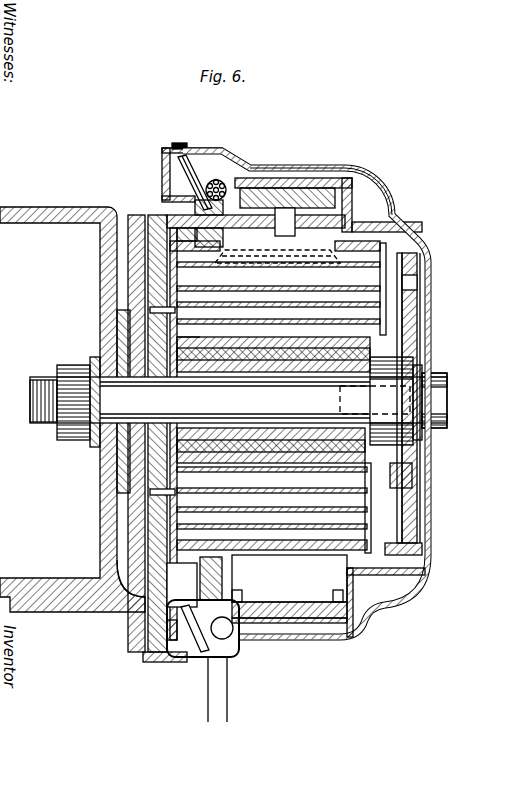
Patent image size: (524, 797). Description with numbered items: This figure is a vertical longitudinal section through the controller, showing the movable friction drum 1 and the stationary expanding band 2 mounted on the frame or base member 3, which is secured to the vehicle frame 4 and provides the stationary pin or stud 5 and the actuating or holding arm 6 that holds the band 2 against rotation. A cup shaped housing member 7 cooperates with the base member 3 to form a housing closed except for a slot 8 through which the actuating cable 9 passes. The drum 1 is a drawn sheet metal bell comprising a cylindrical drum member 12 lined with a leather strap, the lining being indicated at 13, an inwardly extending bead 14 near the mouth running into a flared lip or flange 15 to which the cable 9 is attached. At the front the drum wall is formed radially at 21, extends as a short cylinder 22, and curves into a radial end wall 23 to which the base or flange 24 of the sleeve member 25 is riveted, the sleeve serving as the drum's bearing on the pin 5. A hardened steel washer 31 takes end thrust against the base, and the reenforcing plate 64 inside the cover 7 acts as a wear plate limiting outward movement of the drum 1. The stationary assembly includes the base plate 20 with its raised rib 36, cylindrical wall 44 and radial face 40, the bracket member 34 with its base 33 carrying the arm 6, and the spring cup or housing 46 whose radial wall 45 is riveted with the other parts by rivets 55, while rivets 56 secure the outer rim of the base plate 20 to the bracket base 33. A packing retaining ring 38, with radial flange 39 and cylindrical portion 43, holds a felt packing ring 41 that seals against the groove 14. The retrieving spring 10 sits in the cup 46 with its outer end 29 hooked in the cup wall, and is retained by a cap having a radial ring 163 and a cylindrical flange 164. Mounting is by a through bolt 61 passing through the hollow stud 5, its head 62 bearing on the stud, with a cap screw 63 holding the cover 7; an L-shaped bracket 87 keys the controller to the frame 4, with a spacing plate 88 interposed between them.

The friction drum 1 is at (290, 185).
The expanding band 2 is at (320, 600).
The frame or base member 3 is at (153, 168).
The vehicle frame 4 is at (38, 207).
The pin or stud 5 is at (297, 367).
The actuating or holding arm 6 is at (355, 222).
The cup shaped housing member 7 is at (425, 242).
The slot 8 is at (517, 303).
The actuating cable 9 is at (220, 182).
The retrieving spring 10 is at (350, 297).
The cylindrical drum member 12 is at (262, 190).
The frame ring 13 is at (322, 180).
The inwardly extending bead 14 is at (216, 652).
The flared lip or flange 15 is at (195, 656).
The base plate 20 is at (176, 146).
The radial wall 21 is at (352, 168).
The short cylinder 22 is at (378, 224).
The radial end wall 23 is at (408, 262).
The base or flange 24 is at (418, 305).
The sleeve member 25 is at (345, 352).
The outer end of spring 29 is at (318, 253).
The hardened steel washer 31 is at (193, 333).
The base of bracket 33 is at (213, 246).
The bracket member 34 is at (193, 212).
The raised rib 36 is at (168, 595).
The packing retaining ring 38 is at (240, 183).
The radial flange 39 is at (240, 630).
The radial face 40 is at (168, 658).
The felt packing ring 41 is at (198, 208).
The cylindrical portion 43 is at (173, 572).
The cylindrical wall 44 is at (128, 603).
The radial wall of spring cup 45 is at (155, 520).
The spring cup or housing 46 is at (283, 595).
The rivets 55 is at (165, 310).
The rivets 56 is at (165, 630).
The through bolt 61 is at (82, 438).
The head of bolt 62 is at (415, 365).
The cap screw 63 is at (440, 378).
The reenforcing plate 64 is at (427, 320).
The L-shaped bracket 87 is at (137, 535).
The spacing plate 88 is at (122, 338).
The radial ring 163 is at (425, 490).
The cylindrical flange 164 is at (430, 555).